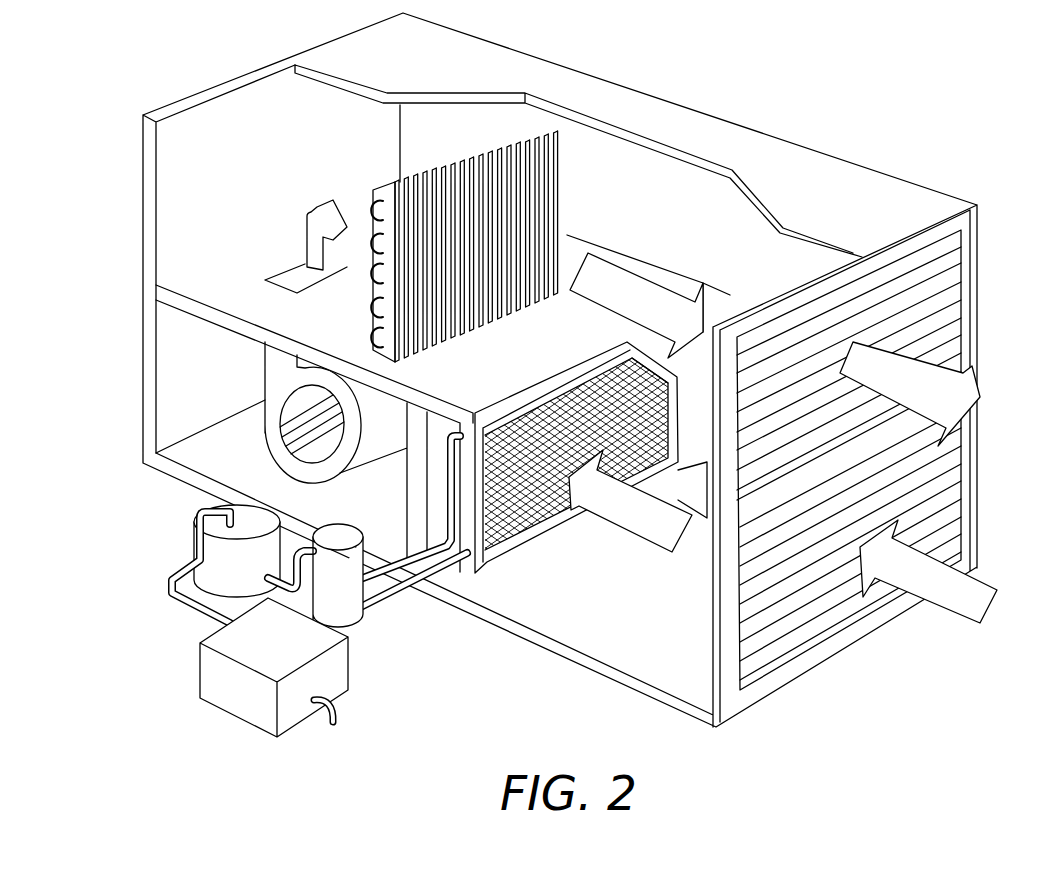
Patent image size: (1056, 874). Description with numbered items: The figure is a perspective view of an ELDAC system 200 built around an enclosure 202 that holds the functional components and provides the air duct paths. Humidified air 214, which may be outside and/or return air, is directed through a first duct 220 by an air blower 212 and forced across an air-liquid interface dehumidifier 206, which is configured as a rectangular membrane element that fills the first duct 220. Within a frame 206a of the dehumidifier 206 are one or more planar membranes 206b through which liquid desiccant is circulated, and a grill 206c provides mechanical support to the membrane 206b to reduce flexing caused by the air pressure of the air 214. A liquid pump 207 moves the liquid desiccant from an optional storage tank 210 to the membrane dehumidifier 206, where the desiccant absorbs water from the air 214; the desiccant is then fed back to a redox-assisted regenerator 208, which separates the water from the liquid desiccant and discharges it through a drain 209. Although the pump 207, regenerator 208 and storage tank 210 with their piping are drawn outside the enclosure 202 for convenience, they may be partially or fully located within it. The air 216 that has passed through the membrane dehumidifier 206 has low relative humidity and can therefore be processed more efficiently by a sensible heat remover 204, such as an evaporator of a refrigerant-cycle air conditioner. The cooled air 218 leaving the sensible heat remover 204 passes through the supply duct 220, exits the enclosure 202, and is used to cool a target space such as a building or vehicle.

The ELDAC system 200 is at (578, 388).
The enclosure 202 is at (607, 80).
The sensible heat remover 204 is at (380, 182).
The air-liquid interface dehumidifier 206 is at (577, 455).
The frame 206a is at (482, 557).
The planar membrane 206b is at (507, 538).
The grill 206c is at (548, 513).
The liquid pump 207 is at (355, 622).
The redox-assisted regenerator 208 is at (250, 727).
The drain 209 is at (340, 713).
The storage tank 210 is at (193, 542).
The air blower 212 is at (272, 388).
The humidified air 214 is at (670, 543).
The air that has passed through the membrane dehumidifier 216 is at (315, 222).
The cooled air 218 is at (613, 277).
The duct 220 is at (688, 195).